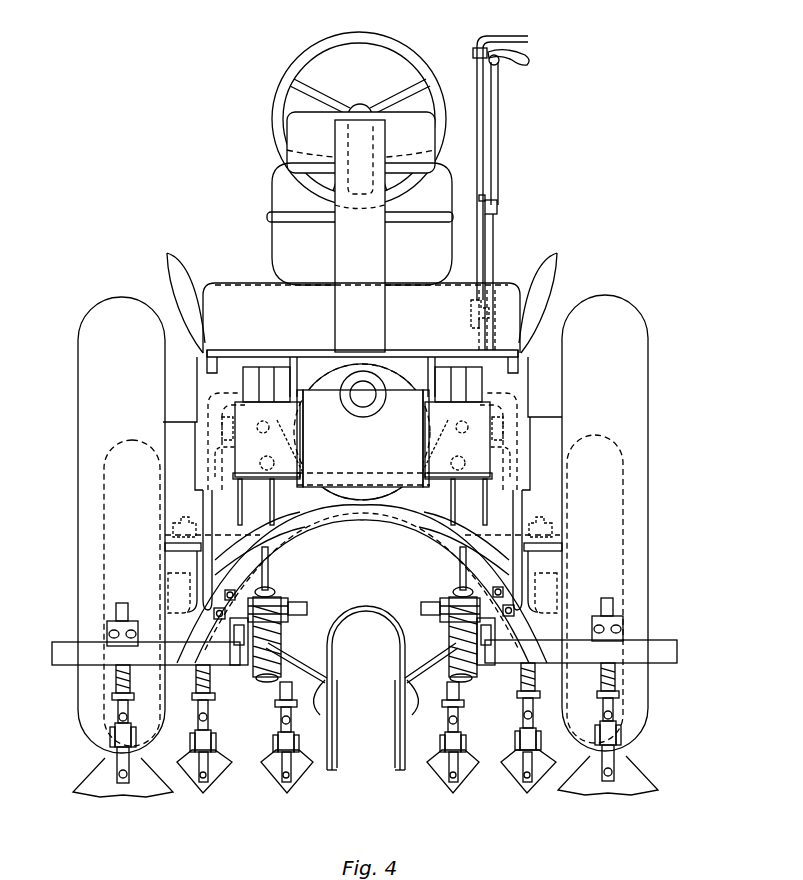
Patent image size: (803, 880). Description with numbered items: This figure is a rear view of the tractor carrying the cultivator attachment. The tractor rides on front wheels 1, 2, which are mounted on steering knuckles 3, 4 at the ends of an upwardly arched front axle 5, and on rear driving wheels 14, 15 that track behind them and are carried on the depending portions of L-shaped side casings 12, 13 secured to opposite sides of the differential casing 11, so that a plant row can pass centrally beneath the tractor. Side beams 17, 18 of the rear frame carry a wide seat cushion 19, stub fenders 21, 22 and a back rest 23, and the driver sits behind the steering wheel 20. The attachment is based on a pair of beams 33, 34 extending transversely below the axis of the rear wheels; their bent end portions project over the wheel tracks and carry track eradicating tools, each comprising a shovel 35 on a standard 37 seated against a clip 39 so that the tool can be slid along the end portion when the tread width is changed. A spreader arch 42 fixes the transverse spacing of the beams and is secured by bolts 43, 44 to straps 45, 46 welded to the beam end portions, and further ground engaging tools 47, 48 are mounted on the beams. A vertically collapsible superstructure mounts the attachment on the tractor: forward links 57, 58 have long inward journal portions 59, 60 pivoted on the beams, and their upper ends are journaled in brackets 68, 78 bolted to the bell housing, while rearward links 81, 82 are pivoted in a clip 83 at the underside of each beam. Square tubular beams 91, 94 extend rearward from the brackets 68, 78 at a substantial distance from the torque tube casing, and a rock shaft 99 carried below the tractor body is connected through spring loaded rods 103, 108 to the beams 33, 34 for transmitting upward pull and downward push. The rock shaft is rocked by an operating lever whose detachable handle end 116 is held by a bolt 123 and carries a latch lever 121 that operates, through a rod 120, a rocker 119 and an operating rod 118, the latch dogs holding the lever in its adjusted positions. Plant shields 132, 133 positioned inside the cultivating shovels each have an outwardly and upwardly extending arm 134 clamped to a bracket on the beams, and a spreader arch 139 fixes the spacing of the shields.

The front wheel 1 is at (104, 474).
The front wheel 2 is at (604, 450).
The steering knuckle 3 is at (185, 522).
The steering knuckle 4 is at (548, 520).
The front axle 5 is at (300, 508).
The differential casing 11 is at (398, 376).
The side casing 12 is at (182, 422).
The side casing 13 is at (545, 422).
The rear driving wheel 14 is at (80, 368).
The rear driving wheel 15 is at (647, 352).
The side beam 17 is at (206, 360).
The side beam 18 is at (519, 358).
The seat cushion 19 is at (242, 286).
The steering wheel 20 is at (300, 78).
The stub fender 21 is at (180, 262).
The stub fender 22 is at (553, 258).
The back rest 23 is at (294, 163).
The beam 33 is at (678, 650).
The beam 34 is at (52, 652).
The shovel 35 is at (96, 788).
The standard 37 is at (122, 602).
The clip 39 is at (137, 622).
The spreader arch 42 is at (312, 527).
The bolt 43 is at (522, 623).
The bolt 44 is at (212, 632).
The strap 45 is at (536, 662).
The strap 46 is at (192, 666).
The shovel 47 is at (200, 788).
The shovel 48 is at (290, 786).
The forward link 57 is at (527, 397).
The forward link 58 is at (200, 396).
The journal portion 59 is at (430, 606).
The journal portion 60 is at (302, 606).
The L-shaped bracket 68 is at (468, 370).
The bracket 78 is at (253, 368).
The rearward link 81 is at (502, 514).
The rearward link 82 is at (222, 524).
The clip 83 is at (241, 666).
The square tubular beam 91 is at (522, 456).
The square tubular beam 94 is at (205, 456).
The rock shaft 99 is at (388, 478).
The rod 103 is at (458, 578).
The rod 108 is at (268, 578).
The handle end 116 is at (477, 142).
The operating rod 118 is at (493, 256).
The rocker 119 is at (499, 205).
The rod 120 is at (499, 132).
The latch lever 121 is at (520, 53).
The bolt 123 is at (471, 313).
The plant shield 132 is at (339, 777).
The plant shield 133 is at (399, 777).
The arm 134 is at (362, 659).
The spreader arch 139 is at (382, 600).